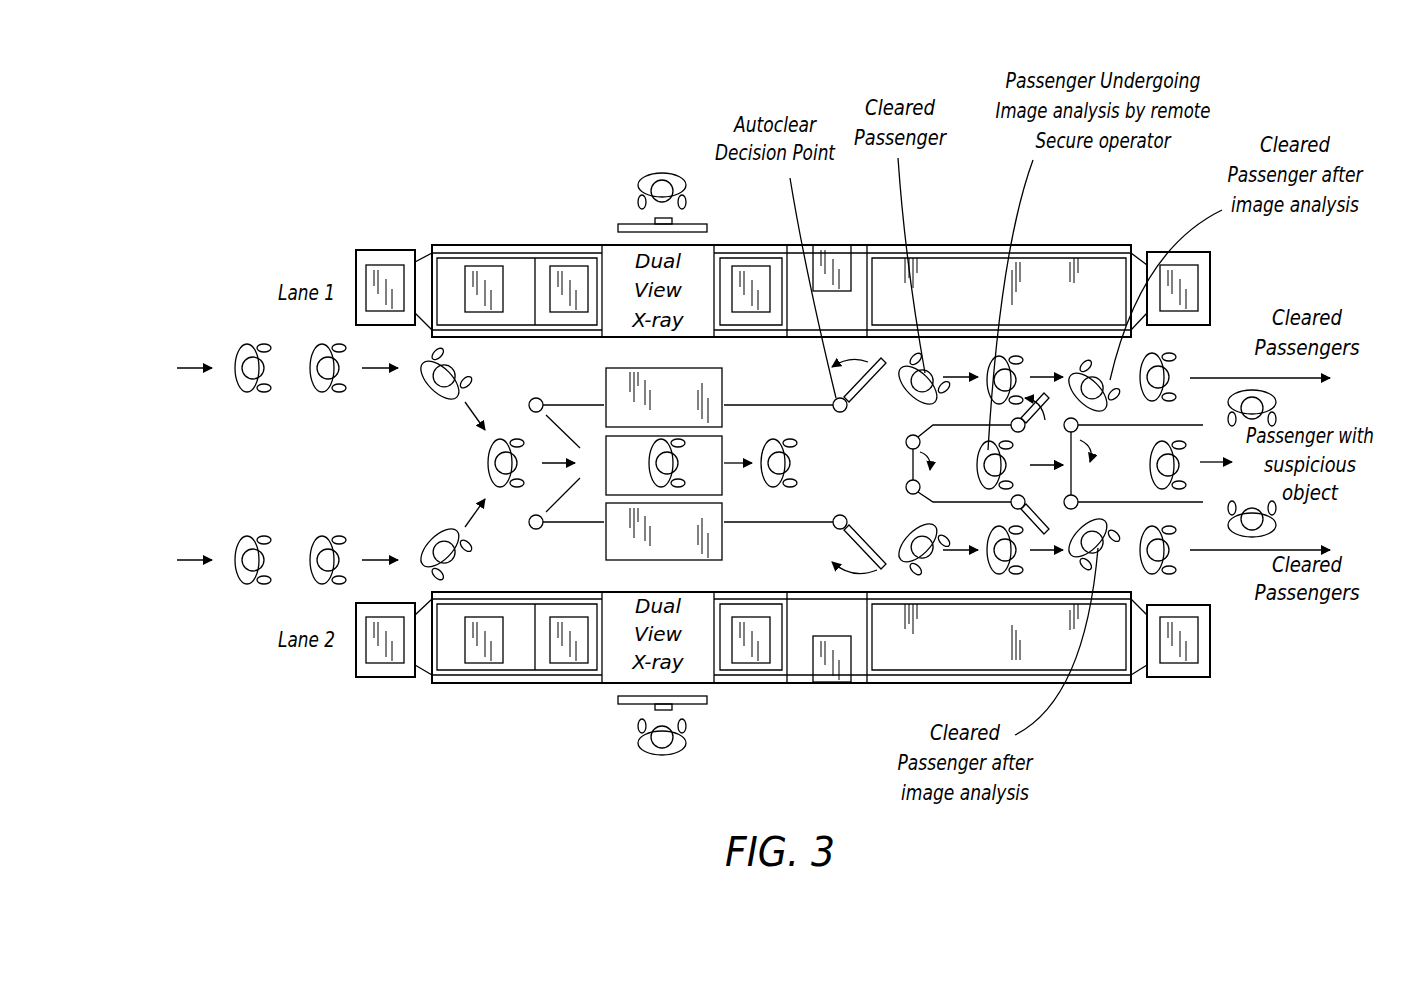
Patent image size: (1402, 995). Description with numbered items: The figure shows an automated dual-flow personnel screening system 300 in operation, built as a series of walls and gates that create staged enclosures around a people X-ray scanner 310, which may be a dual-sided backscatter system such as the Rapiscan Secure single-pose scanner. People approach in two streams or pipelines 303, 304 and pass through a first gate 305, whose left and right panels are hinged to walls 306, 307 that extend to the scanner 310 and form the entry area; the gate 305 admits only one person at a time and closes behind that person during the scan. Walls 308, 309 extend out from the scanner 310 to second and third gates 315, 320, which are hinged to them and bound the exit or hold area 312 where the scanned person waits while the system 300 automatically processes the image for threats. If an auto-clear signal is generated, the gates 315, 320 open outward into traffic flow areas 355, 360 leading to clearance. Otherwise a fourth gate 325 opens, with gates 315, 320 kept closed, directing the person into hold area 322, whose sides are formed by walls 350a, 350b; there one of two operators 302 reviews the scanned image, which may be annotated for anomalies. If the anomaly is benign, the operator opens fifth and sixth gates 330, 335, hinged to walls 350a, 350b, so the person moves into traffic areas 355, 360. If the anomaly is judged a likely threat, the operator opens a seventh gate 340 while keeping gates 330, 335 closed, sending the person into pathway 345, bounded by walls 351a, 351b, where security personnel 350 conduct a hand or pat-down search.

The automated dual-flow personnel screening system 300 is at (287, 118).
The operators 302 is at (645, 178).
The first stream or pipeline 303 is at (210, 345).
The second stream or pipeline 304 is at (210, 537).
The first gate 305 is at (531, 399).
The wall 306 is at (600, 403).
The wall 307 is at (598, 524).
The wall 308 is at (745, 403).
The wall 309 is at (745, 524).
The people X-ray scanner 310 is at (628, 541).
The hold area 312 is at (792, 500).
The second gate 315 is at (882, 360).
The third gate 320 is at (877, 570).
The hold area 322 is at (971, 456).
The fourth gate 325 is at (910, 462).
The fifth gate 330 is at (1036, 424).
The sixth gate 335 is at (1022, 511).
The seventh gate 340 is at (1078, 480).
The area or pathway 345 is at (1197, 486).
The security personnel 350 is at (1272, 404).
The wall 350a is at (956, 424).
The wall 350b is at (935, 502).
The wall 351a is at (1137, 426).
The wall 351b is at (1123, 504).
The traffic flow area 355 is at (1077, 371).
The traffic flow area 360 is at (1079, 585).